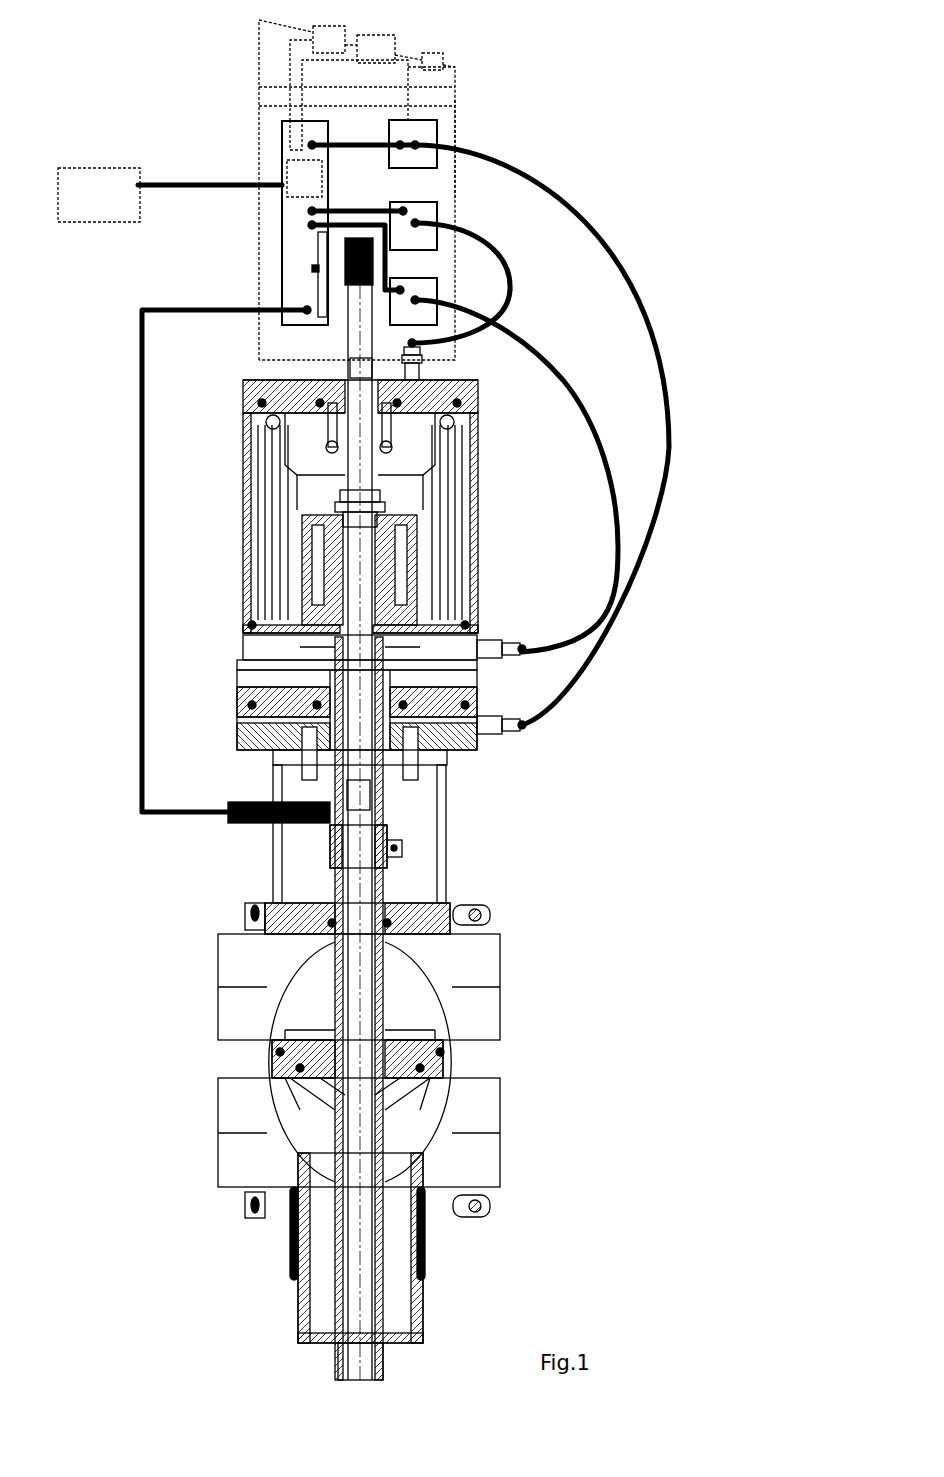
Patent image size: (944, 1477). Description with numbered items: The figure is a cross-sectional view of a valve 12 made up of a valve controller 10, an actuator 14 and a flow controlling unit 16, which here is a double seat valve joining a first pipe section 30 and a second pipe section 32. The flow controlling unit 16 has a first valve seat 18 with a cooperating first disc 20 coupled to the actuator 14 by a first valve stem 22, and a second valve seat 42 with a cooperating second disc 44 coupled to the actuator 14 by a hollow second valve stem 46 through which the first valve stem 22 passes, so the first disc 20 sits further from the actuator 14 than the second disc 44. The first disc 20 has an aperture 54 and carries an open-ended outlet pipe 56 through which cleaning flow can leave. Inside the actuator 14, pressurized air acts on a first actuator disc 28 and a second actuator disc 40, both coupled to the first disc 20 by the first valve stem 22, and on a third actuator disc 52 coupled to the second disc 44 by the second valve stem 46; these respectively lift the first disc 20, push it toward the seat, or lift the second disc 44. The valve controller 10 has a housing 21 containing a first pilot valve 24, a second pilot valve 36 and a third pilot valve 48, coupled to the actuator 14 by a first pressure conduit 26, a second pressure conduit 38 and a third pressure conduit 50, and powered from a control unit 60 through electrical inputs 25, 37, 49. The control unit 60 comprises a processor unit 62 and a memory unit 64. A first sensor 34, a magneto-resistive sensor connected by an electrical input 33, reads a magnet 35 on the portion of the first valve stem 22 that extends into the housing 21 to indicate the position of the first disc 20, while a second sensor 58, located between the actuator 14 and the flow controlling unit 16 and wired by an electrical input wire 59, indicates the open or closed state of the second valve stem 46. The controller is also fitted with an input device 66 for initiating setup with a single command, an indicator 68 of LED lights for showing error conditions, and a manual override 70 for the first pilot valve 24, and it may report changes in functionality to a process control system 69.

The valve controller 10 is at (250, 62).
The valve 12 is at (495, 822).
The actuator 14 is at (232, 462).
The flow controlling unit 16 is at (462, 1062).
The first valve seat 18 is at (300, 1068).
The first disc 20 is at (330, 1095).
The housing 21 is at (440, 138).
The first valve stem 22 is at (348, 300).
The first pilot valve 24 is at (455, 128).
The electrical input 25 is at (430, 106).
The first pressure conduit 26 is at (618, 252).
The first actuator disc 28 is at (252, 628).
The first pipe section 30 is at (500, 970).
The second pipe section 32 is at (500, 1165).
The electrical input 33 is at (312, 268).
The first sensor 34 is at (320, 265).
The magnet 35 is at (345, 255).
The second pilot valve 36 is at (437, 210).
The electrical input 37 is at (405, 210).
The second pressure conduit 38 is at (500, 297).
The second actuator disc 40 is at (280, 390).
The second valve seat 42 is at (280, 1052).
The second disc 44 is at (300, 1035).
The second valve stem 46 is at (385, 650).
The third pilot valve 48 is at (460, 275).
The electrical input 49 is at (485, 250).
The third pressure conduit 50 is at (560, 380).
The third actuator disc 52 is at (245, 715).
The aperture 54 is at (300, 1130).
The outlet pipe 56 is at (350, 1262).
The second sensor 58 is at (262, 825).
The electrical input wire 59 is at (173, 822).
The control unit 60 is at (320, 238).
The processor unit 62 is at (290, 140).
The memory unit 64 is at (287, 180).
The input device 66 is at (312, 27).
The indicator 68 is at (395, 42).
The process control system 69 is at (100, 168).
The manual override 70 is at (443, 62).